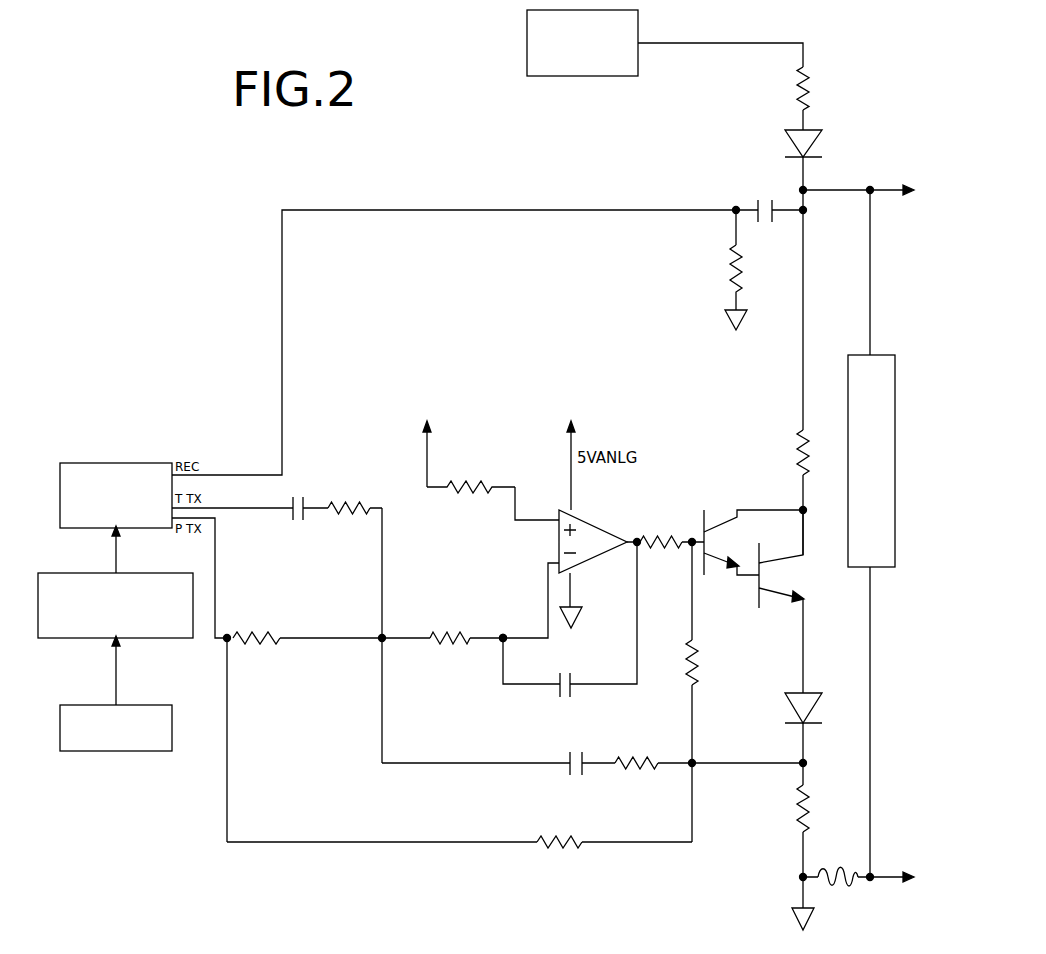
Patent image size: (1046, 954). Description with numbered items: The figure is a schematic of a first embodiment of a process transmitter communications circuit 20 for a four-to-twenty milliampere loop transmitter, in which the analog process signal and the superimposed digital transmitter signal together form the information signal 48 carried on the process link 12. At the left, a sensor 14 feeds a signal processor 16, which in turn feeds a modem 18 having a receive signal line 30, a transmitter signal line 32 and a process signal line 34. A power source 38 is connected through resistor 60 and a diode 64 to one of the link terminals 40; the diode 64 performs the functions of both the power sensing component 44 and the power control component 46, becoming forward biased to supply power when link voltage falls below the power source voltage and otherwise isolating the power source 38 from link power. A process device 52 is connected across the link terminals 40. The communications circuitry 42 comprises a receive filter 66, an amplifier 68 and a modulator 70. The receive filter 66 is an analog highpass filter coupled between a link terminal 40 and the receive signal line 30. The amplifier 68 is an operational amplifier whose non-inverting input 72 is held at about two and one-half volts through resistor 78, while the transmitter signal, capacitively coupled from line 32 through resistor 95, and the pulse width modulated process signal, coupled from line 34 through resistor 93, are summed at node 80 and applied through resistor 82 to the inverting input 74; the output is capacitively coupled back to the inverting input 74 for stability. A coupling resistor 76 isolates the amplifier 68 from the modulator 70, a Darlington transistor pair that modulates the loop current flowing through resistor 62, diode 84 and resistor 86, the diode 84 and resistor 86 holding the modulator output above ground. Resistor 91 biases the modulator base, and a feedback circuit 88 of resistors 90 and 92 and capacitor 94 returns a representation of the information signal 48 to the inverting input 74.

The process link 12 is at (842, 190).
The sensor 14 is at (64, 705).
The signal processor 16 is at (50, 572).
The modem 18 is at (72, 466).
The communications circuit 20 is at (213, 298).
The receive signal line 30 is at (241, 473).
The transmitter signal line 32 is at (268, 495).
The process signal line 34 is at (216, 557).
The power source 38 is at (645, 34).
The link terminals 40 is at (857, 564).
The communications circuitry 42 is at (637, 430).
The power sensing component 44 is at (847, 122).
The power control component 46 is at (868, 118).
The information signal 48 is at (844, 896).
The sense line 52 is at (868, 354).
The resistor 60 is at (812, 86).
The resistor 62 is at (805, 447).
The diode 64 is at (819, 123).
The receive filter 66 is at (715, 201).
The amplifier 68 is at (499, 388).
The modulator 70 is at (727, 500).
The non-inverting input 72 is at (533, 520).
The inverting input 74 is at (514, 637).
The coupling resistor 76 is at (662, 538).
The resistor 78 is at (468, 486).
The summing node 80 is at (380, 636).
The resistor 82 is at (451, 635).
The diode 84 is at (822, 705).
The resistor 86 is at (810, 806).
The feedback circuit 88 is at (459, 856).
The resistor 90 is at (636, 758).
The resistor 91 is at (702, 660).
The resistor 92 is at (576, 827).
The resistor 93 is at (275, 642).
The capacitor 94 is at (569, 758).
The resistor 95 is at (348, 503).